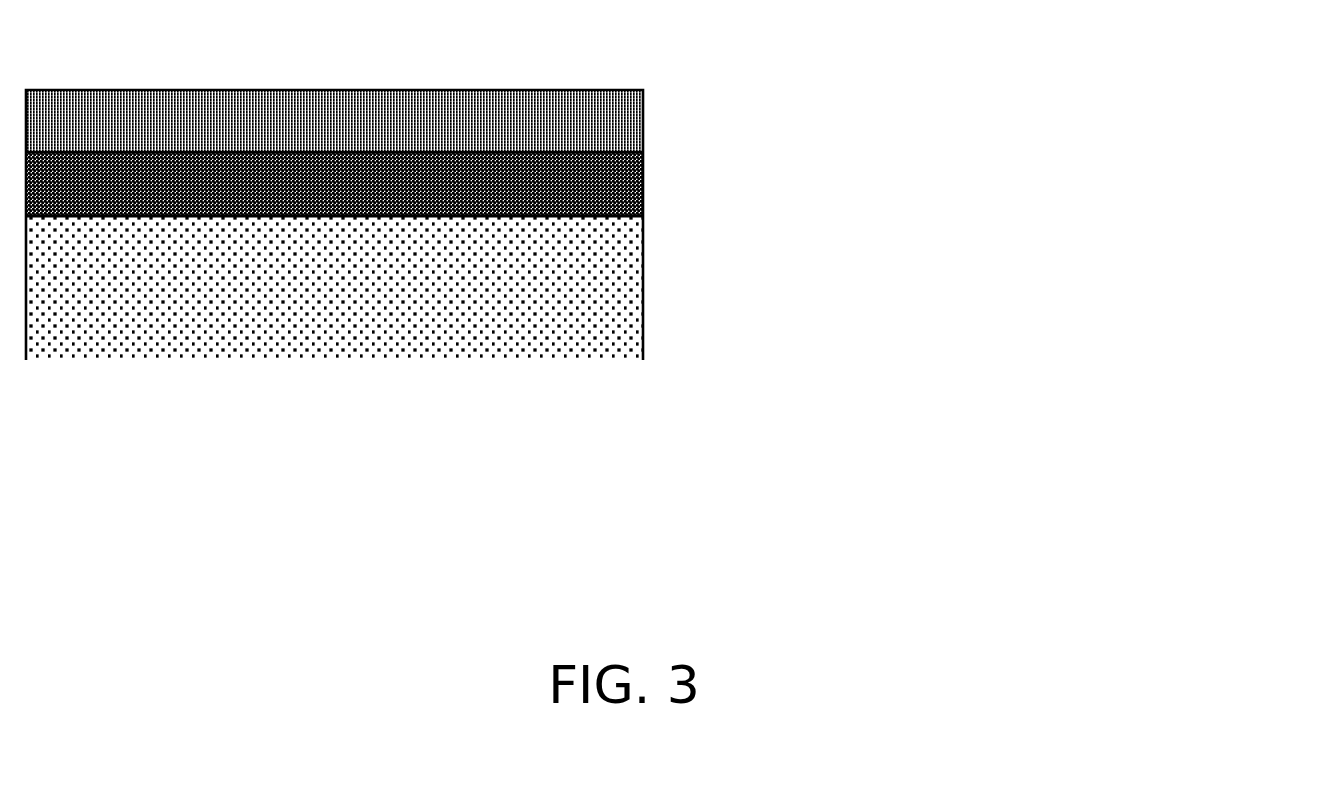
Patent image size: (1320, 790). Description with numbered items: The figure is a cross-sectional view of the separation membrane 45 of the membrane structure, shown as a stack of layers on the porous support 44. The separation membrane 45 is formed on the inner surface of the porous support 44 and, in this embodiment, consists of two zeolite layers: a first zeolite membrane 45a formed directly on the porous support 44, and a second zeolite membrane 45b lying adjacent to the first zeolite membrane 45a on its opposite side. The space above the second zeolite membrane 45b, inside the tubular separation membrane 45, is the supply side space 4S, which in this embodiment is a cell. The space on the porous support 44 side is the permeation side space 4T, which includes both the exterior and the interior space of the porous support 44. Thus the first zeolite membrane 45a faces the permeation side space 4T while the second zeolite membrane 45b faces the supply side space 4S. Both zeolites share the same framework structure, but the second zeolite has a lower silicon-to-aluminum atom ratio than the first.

The supply side space 4S is at (334, 62).
The separation membrane 45 is at (668, 141).
The second zeolite membrane 45b is at (646, 147).
The first zeolite membrane 45a is at (462, 189).
The porous support 44 is at (547, 291).
The permeation side space 4T is at (646, 217).